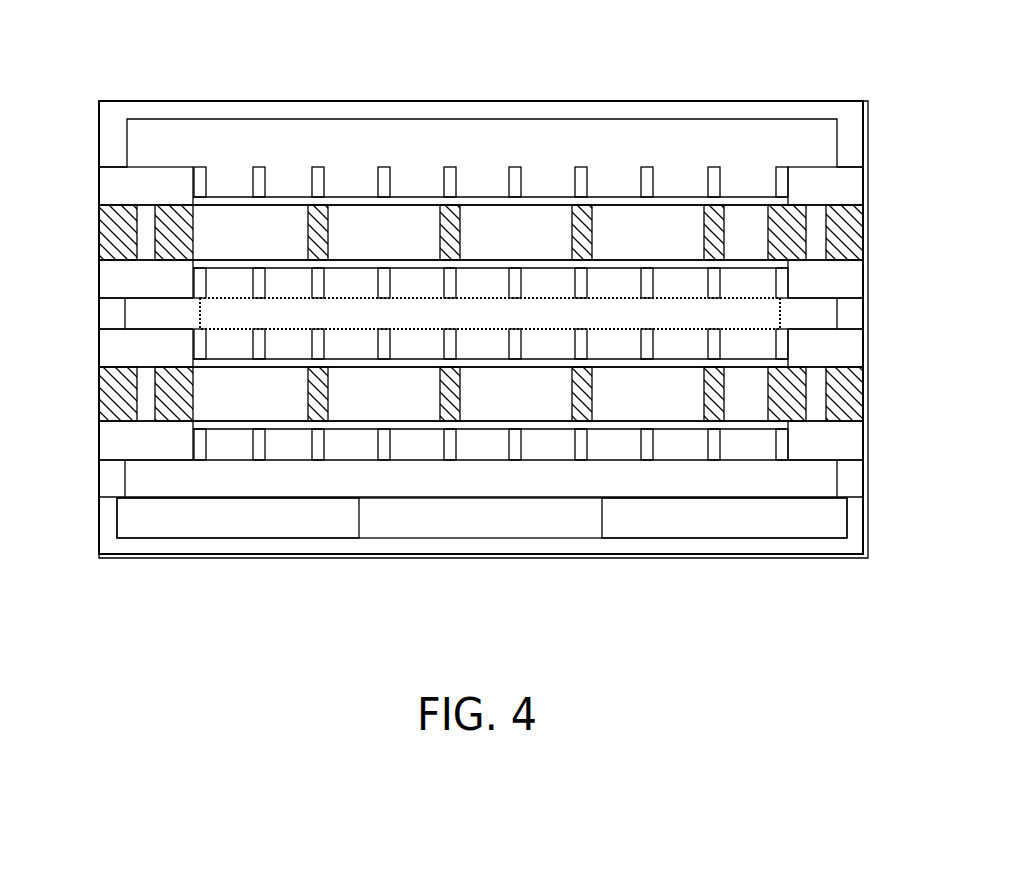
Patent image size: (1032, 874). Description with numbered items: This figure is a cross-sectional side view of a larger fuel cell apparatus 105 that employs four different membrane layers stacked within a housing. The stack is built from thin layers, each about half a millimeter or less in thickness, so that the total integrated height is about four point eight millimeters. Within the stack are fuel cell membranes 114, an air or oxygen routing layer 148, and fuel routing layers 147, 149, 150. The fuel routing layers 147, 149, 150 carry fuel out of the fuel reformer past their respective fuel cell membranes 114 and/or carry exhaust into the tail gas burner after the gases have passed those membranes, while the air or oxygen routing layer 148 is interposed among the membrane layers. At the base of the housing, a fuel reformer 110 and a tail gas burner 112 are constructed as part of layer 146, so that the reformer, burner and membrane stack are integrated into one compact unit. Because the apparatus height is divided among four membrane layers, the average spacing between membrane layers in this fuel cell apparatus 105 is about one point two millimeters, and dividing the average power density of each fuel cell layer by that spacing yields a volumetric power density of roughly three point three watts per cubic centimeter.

The fuel cell apparatus 105 is at (648, 50).
The fuel routing layer 150 is at (99, 134).
The fuel cell membrane 114 is at (868, 187).
The air or oxygen routing layer 148 is at (99, 234).
The fuel routing layer 149 is at (99, 313).
The fuel routing layer 147 is at (99, 475).
The layer 146 is at (441, 551).
The fuel reformer 110 is at (255, 518).
The tail gas burner 112 is at (737, 520).